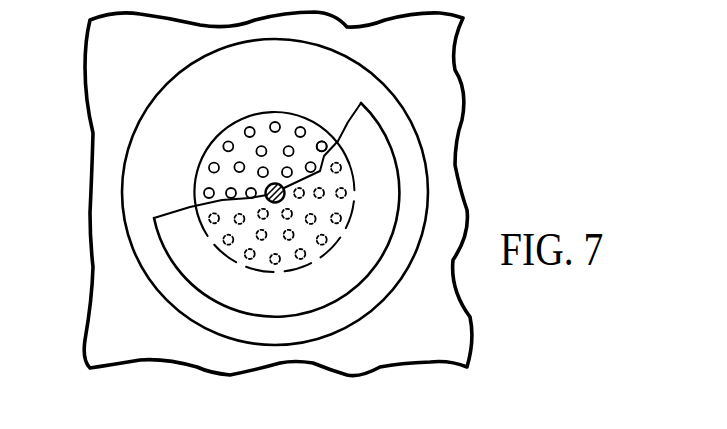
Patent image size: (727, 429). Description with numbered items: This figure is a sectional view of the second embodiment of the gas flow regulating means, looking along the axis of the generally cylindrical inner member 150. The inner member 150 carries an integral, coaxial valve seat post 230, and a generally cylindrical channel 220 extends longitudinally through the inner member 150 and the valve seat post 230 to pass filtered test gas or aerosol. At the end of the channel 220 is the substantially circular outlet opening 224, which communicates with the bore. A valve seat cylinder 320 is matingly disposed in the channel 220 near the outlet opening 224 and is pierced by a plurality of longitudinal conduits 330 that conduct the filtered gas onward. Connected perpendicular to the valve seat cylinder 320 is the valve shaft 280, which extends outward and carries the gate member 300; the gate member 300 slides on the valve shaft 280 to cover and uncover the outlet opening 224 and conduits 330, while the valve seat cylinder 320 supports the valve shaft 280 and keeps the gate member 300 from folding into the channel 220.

The inner member 150 is at (447, 113).
The valve seat post 230 is at (187, 301).
The gate member 300 is at (379, 116).
The channel 220 is at (299, 117).
The outlet opening 224 is at (200, 177).
The longitudinal conduits 330 is at (212, 165).
The valve seat cylinder 320 is at (316, 132).
The valve shaft 280 is at (275, 183).